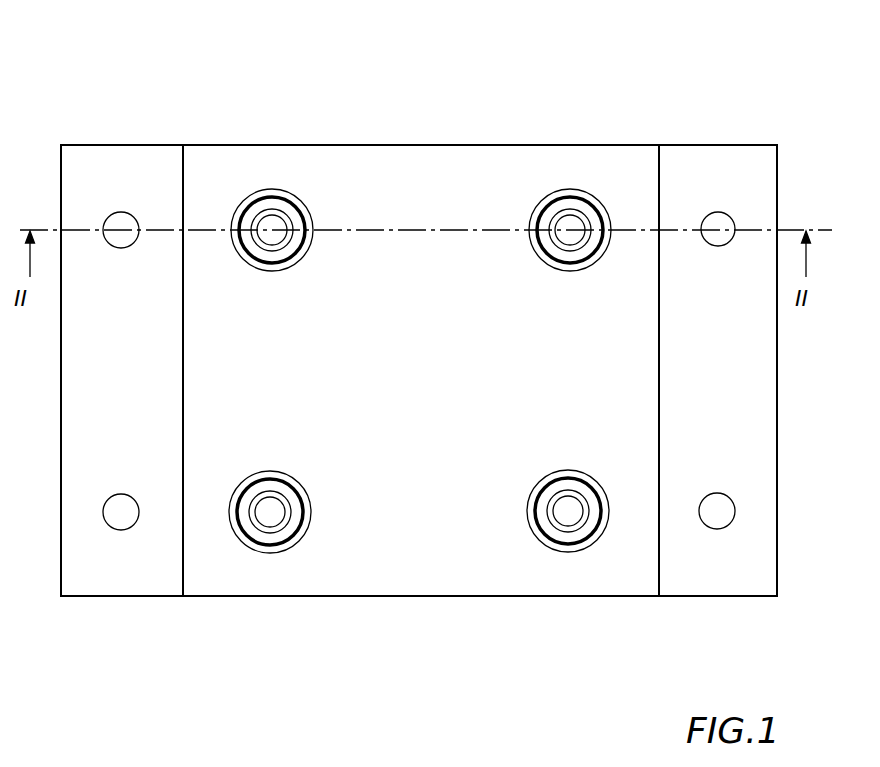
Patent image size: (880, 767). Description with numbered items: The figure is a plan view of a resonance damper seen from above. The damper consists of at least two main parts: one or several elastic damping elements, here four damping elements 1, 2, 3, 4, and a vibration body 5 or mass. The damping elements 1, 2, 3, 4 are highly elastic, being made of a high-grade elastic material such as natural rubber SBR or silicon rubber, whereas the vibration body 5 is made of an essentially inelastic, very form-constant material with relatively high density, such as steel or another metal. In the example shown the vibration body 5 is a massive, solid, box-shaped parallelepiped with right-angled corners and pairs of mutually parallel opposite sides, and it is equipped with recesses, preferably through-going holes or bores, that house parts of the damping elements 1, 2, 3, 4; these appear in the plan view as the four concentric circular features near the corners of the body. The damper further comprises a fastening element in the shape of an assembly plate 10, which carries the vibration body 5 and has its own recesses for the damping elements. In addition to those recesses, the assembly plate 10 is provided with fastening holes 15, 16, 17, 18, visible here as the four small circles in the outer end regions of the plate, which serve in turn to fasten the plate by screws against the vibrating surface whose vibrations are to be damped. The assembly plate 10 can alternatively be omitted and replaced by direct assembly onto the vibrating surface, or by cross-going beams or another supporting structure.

The elastic damping element 1 is at (255, 550).
The elastic damping element 2 is at (548, 550).
The elastic damping element 3 is at (565, 186).
The elastic damping element 4 is at (275, 186).
The vibration body 5 is at (326, 600).
The assembly plate 10 is at (55, 568).
The fastening hole 15 is at (130, 526).
The fastening hole 16 is at (712, 522).
The fastening hole 17 is at (718, 214).
The fastening hole 18 is at (116, 214).